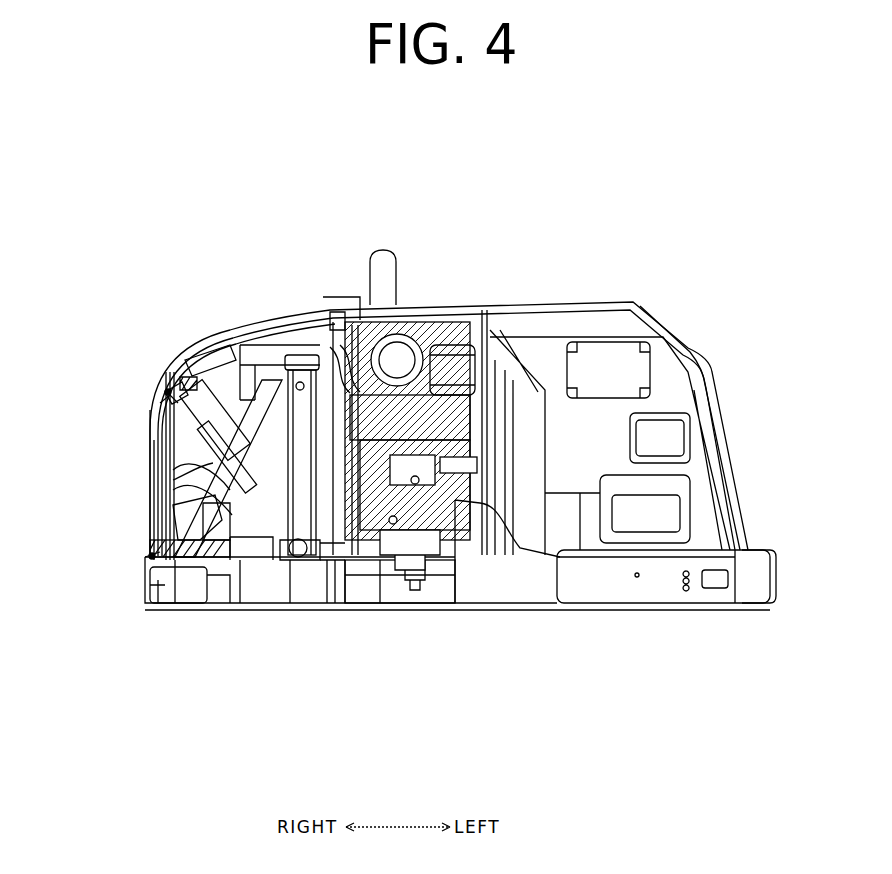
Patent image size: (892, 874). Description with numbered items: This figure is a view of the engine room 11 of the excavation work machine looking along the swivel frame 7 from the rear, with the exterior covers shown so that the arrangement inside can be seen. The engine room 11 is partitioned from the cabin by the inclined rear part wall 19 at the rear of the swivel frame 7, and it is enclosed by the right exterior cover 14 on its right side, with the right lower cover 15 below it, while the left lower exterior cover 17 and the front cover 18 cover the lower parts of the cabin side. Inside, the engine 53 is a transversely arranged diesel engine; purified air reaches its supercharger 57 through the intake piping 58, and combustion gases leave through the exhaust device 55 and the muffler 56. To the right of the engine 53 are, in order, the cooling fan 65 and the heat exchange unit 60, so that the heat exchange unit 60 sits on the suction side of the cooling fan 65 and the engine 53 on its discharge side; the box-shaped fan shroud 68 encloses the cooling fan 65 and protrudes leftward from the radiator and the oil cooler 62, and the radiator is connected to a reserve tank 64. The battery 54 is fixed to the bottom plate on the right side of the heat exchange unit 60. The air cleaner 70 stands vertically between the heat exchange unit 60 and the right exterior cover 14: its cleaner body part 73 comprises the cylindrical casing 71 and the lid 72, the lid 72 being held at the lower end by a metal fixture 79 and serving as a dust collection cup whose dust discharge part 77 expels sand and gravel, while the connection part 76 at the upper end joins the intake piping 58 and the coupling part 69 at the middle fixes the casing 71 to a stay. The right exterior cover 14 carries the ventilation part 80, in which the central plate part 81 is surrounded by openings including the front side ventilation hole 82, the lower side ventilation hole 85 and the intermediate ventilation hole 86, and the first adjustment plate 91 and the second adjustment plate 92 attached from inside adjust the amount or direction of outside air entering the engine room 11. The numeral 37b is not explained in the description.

The swivel frame 7 is at (565, 602).
The engine room 11 is at (256, 692).
The right exterior cover 14 is at (150, 457).
The right lower cover 15 is at (176, 610).
The left lower exterior cover 17 is at (762, 548).
The front cover 18 is at (615, 604).
The rear part wall 19 is at (588, 300).
The bracket 37b is at (150, 406).
The engine 53 is at (428, 282).
The battery 54 is at (210, 608).
The exhaust device 55 is at (432, 300).
The muffler 56 is at (380, 252).
The supercharger 57 is at (476, 300).
The intake piping 58 is at (290, 340).
The heat exchange unit 60 is at (327, 642).
The oil cooler 62 is at (333, 600).
The reserve tank 64 is at (298, 600).
The cooling fan 65 is at (376, 602).
The fan shroud 68 is at (355, 602).
The coupling part 69 is at (226, 390).
The air cleaner 70 is at (242, 230).
The casing 71 is at (222, 388).
The lid 72 is at (200, 395).
The cleaner body part 73 is at (224, 250).
The connection part 76 is at (252, 345).
The dust discharge part 77 is at (240, 592).
The metal fixture 79 is at (190, 608).
The ventilation part 80 is at (148, 436).
The central plate part 81 is at (160, 512).
The front side ventilation hole 82 is at (160, 478).
The lower side ventilation hole 85 is at (156, 592).
The intermediate ventilation hole 86 is at (168, 390).
The first adjustment plate 91 is at (207, 390).
The second adjustment plate 92 is at (146, 552).